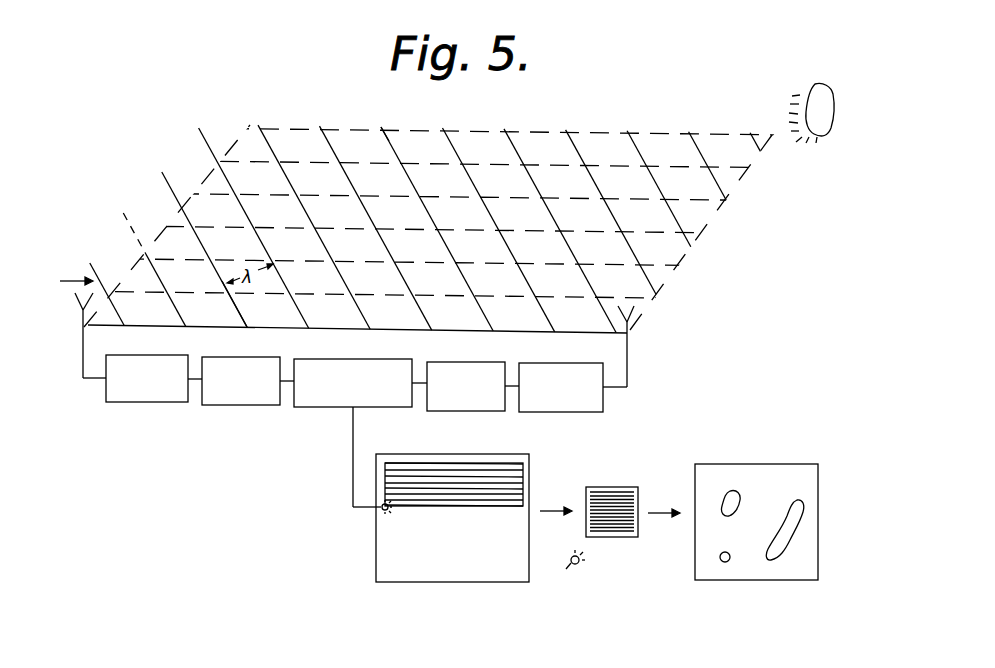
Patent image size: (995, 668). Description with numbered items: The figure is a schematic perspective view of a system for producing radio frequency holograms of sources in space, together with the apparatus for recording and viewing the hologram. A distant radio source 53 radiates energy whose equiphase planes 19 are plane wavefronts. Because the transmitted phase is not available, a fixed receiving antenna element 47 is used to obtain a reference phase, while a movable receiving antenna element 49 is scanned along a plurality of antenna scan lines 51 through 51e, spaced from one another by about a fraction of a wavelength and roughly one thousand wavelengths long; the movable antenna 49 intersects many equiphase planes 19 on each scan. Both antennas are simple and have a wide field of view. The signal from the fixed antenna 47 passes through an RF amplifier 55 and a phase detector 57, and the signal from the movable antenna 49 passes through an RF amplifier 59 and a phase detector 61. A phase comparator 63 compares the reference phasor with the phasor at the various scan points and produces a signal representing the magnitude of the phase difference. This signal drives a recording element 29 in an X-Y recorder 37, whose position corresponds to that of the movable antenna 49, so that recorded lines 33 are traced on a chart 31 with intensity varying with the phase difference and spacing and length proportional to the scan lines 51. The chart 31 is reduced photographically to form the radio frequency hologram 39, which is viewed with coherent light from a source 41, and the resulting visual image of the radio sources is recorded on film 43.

The equiphase planes 19 is at (387, 243).
The antenna scan line 51e is at (408, 119).
The antenna scan lines 51 is at (220, 325).
The movable receiving antenna element 49 is at (78, 312).
The fixed receiving antenna element 47 is at (630, 325).
The distant radio source 53 is at (810, 83).
The RF amplifier 59 is at (124, 402).
The phase detector 61 is at (249, 405).
The phase comparator 63 is at (326, 407).
The phase detector 57 is at (479, 411).
The RF amplifier 55 is at (604, 406).
The X-Y recorder 37 is at (368, 565).
The recorded lines 33 is at (500, 465).
The recorded chart 31 is at (528, 470).
The recording element 29 is at (380, 510).
The radio frequency hologram 39 is at (608, 487).
The coherent light source 41 is at (578, 567).
The film 43 is at (765, 465).